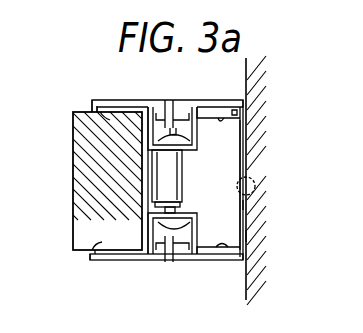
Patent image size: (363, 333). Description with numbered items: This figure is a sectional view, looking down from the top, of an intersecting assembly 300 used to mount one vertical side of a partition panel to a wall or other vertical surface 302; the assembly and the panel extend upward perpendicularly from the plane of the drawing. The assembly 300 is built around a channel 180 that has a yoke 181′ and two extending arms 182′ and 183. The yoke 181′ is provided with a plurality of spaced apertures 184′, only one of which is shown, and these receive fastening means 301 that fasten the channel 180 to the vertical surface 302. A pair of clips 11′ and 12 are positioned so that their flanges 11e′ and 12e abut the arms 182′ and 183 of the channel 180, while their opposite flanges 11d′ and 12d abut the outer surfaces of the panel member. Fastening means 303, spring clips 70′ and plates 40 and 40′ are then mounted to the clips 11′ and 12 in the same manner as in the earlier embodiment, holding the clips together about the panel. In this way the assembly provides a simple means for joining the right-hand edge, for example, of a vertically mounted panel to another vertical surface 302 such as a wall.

The plate 40 is at (105, 99).
The plate 40′ is at (163, 261).
The clip 11′ is at (139, 94).
The flange 11d′ is at (113, 116).
The flange 11e′ is at (207, 96).
The spring clip 70′ is at (162, 104).
The extending arm 182′ is at (220, 116).
The vertical surface 302 is at (298, 108).
The intersecting assembly 300 is at (62, 181).
The fastening means 303 is at (183, 177).
The fastening means 301 is at (254, 186).
The yoke 181′ is at (243, 206).
The spaced aperture 184′ is at (243, 204).
The channel 180 is at (246, 235).
The extending arm 183 is at (218, 256).
The flange 12d is at (100, 240).
The clip 12 is at (118, 261).
The flange 12e is at (195, 261).